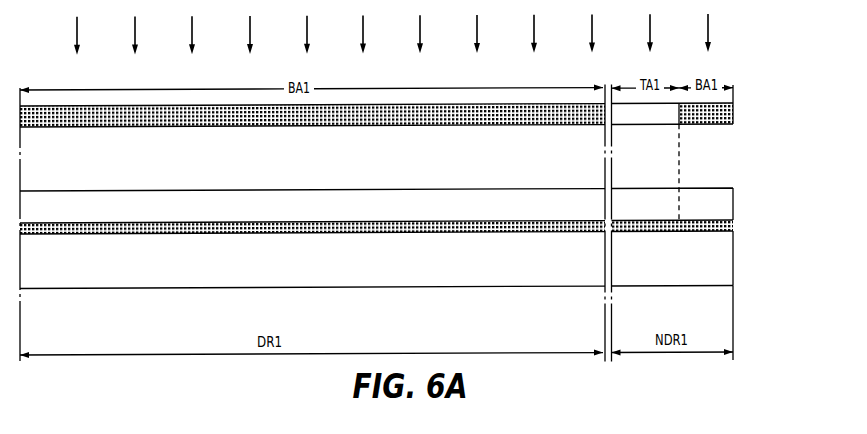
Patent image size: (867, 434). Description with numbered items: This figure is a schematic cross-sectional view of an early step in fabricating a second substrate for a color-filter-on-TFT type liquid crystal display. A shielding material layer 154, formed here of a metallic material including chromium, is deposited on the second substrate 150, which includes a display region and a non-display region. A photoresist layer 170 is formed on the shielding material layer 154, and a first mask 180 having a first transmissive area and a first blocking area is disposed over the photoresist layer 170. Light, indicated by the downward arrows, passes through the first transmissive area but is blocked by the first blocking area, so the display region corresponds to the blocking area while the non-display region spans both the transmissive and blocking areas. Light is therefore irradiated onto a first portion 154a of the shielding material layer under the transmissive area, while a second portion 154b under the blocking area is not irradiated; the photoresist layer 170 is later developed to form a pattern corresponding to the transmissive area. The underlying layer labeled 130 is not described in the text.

The substrate 130 is at (376, 307).
The second substrate 150 is at (292, 272).
The shielding material layer 154 is at (376, 229).
The first portion 154a is at (647, 206).
The second portion 154b is at (385, 197).
The photoresist layer 170 is at (556, 209).
The first mask 180 is at (735, 117).